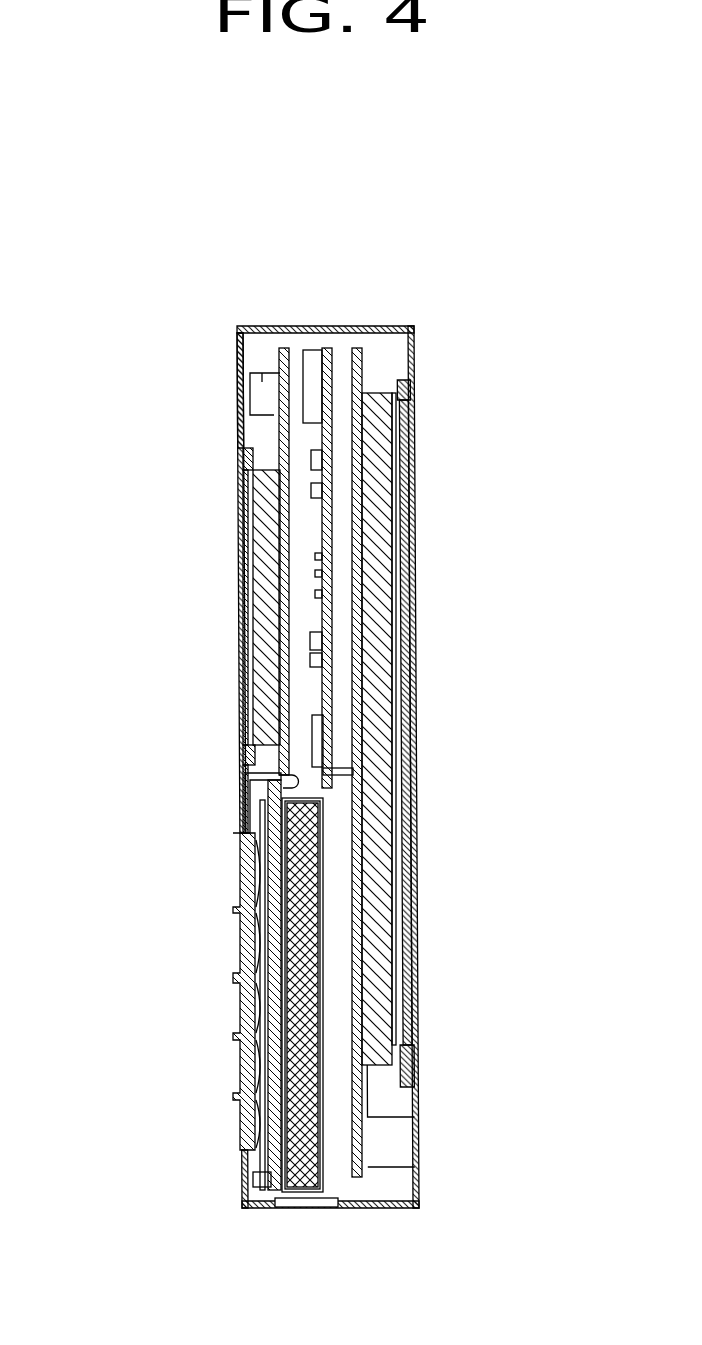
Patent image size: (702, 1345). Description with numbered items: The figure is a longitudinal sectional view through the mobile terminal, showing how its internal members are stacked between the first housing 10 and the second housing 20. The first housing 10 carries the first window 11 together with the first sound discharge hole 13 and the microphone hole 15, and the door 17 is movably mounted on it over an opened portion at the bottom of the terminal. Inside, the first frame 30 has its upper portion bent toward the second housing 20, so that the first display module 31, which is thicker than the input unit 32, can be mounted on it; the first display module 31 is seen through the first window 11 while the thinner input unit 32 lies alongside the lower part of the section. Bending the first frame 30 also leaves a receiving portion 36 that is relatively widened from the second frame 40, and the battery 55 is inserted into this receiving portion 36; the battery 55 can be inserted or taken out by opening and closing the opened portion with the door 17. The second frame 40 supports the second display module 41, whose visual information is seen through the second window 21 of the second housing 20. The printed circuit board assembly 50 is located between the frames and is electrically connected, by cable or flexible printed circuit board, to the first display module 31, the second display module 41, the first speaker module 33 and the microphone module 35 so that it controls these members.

The first housing 10 is at (273, 326).
The second housing 20 is at (372, 326).
The first window 11 is at (238, 512).
The first sound discharge hole 13 is at (237, 393).
The microphone hole 15 is at (245, 1175).
The door 17 is at (310, 1205).
The second window 21 is at (420, 935).
The first frame 30 is at (262, 433).
The first display module 31 is at (262, 566).
The input unit 32 is at (232, 907).
The first speaker module 33 is at (262, 375).
The microphone module 35 is at (258, 1195).
The receiving portion 36 is at (240, 778).
The second frame 40 is at (357, 418).
The second display module 41 is at (380, 798).
The printed circuit board assembly 50 is at (333, 530).
The battery 55 is at (313, 1018).